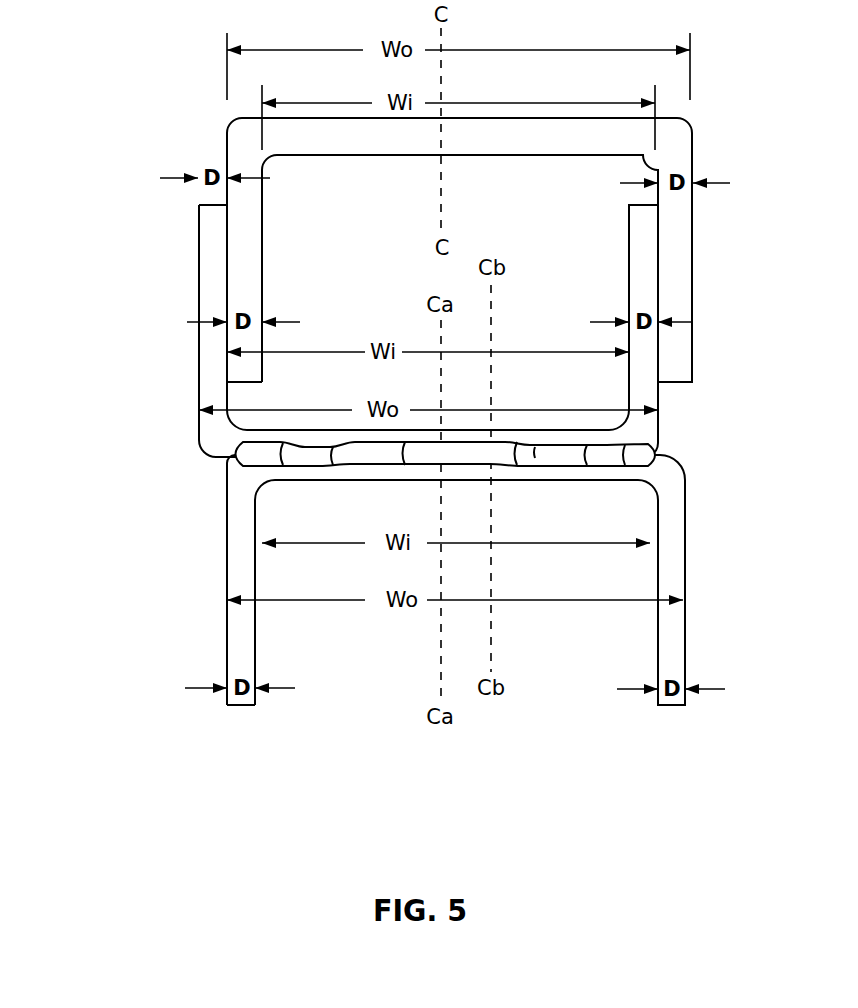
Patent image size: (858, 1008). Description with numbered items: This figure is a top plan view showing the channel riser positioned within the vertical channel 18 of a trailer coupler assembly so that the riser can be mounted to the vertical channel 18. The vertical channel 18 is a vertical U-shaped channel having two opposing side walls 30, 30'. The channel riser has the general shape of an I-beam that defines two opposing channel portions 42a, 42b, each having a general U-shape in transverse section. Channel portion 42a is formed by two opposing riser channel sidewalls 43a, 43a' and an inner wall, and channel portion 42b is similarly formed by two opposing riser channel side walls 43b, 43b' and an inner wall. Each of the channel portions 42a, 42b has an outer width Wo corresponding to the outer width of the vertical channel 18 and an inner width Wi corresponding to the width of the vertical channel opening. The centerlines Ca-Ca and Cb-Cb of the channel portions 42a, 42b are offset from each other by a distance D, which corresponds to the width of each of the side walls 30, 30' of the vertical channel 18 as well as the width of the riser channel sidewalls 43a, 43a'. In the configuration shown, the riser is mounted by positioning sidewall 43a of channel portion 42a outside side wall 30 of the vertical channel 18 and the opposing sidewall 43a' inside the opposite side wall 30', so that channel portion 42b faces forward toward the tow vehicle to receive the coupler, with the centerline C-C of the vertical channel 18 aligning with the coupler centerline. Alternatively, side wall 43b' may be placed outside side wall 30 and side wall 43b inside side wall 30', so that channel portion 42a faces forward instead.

The vertical channel 18 is at (348, 135).
The side wall of vertical channel 30 is at (293, 250).
The side wall of vertical channel 30' is at (635, 250).
The channel portion 42a is at (433, 331).
The riser channel sidewall 43a is at (261, 331).
The riser channel sidewall 43a' is at (612, 330).
The channel portion 42b is at (462, 580).
The riser channel side wall 43b is at (276, 580).
The riser channel side wall 43b' is at (641, 580).